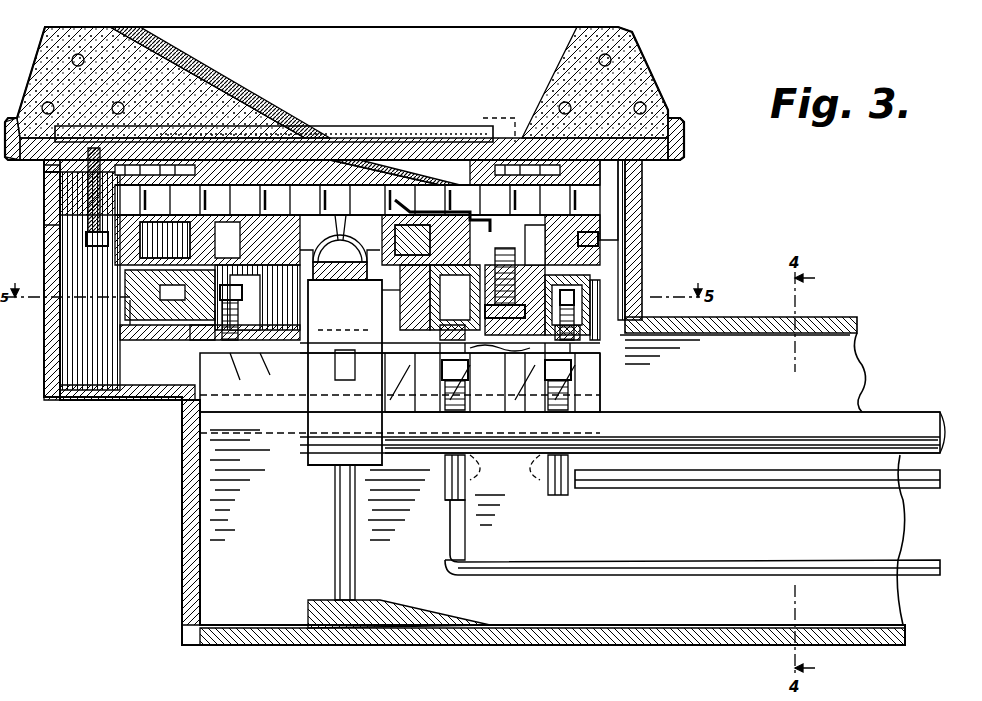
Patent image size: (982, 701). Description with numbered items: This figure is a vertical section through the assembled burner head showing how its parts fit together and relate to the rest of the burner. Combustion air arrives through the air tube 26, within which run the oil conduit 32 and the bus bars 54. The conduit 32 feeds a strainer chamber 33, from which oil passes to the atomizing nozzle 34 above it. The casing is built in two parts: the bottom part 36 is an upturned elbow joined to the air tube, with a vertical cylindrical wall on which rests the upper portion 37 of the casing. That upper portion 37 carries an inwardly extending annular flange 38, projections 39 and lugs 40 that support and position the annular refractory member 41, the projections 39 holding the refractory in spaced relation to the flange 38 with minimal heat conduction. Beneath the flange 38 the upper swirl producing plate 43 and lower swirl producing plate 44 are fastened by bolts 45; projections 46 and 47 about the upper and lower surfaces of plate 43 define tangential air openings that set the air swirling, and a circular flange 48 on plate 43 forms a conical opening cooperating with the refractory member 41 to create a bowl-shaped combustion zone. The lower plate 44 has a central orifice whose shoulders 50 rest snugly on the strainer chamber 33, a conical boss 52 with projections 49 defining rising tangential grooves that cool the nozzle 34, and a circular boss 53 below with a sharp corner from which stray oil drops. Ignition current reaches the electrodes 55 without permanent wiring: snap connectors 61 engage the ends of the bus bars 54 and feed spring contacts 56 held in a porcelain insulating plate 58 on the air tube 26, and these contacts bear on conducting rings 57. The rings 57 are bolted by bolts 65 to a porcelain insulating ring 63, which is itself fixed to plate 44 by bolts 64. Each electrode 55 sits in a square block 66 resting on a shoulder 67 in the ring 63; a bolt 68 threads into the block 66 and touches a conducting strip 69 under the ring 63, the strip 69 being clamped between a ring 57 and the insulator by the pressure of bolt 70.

The air tube 26 is at (858, 345).
The conduit 32 is at (940, 410).
The strainer chamber 33 is at (308, 455).
The atomizing nozzle 34 is at (344, 214).
The bottom part of casing 36 is at (45, 366).
The upper portion of burner head casing 37 is at (48, 216).
The annular flange 38 is at (500, 142).
The projections 39 is at (644, 165).
The lugs 40 is at (686, 136).
The annular refractory member 41 is at (70, 60).
The upper swirl producing plate 43 is at (52, 180).
The lower swirl producing plate 44 is at (88, 228).
The bolts 45 is at (90, 244).
The projections 46 is at (622, 186).
The projections 47 is at (622, 210).
The circular flange 48 is at (312, 140).
The projections 49 is at (405, 258).
The shoulders 50 is at (372, 280).
The conical boss 52 is at (290, 220).
The circular boss 53 is at (404, 292).
The bus bars 54 is at (942, 478).
The electrodes 55 is at (400, 200).
The spring contacts 56 is at (450, 347).
The conducting rings 57 is at (205, 340).
The insulating plate 58 is at (600, 400).
The snap connectors 61 is at (506, 430).
The porcelain insulating ring 63 is at (292, 340).
The bolts 64 is at (412, 201).
The bolts 65 is at (238, 340).
The square block 66 is at (560, 240).
The shoulder 67 is at (470, 290).
The bolt 68 is at (500, 262).
The conducting strip 69 is at (586, 328).
The bolt 70 is at (588, 300).